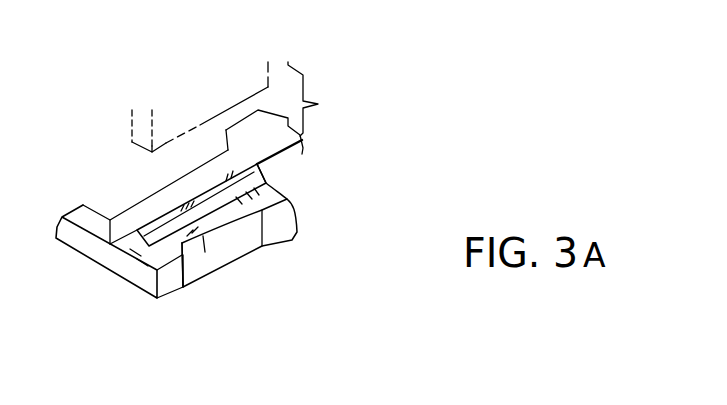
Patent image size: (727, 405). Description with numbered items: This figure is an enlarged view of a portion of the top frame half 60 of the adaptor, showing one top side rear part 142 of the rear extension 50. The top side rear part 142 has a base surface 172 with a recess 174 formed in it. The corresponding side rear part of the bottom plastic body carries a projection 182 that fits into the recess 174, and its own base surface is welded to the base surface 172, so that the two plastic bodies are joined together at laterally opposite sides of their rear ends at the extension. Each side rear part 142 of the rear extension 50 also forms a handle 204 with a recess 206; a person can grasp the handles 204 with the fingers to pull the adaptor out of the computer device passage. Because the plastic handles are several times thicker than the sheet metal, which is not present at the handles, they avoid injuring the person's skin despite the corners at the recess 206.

The rear extension 50 is at (330, 283).
The top frame half 60 is at (323, 165).
The top side rear part 142 is at (390, 242).
The base surface 172 is at (272, 192).
The recess 174 is at (223, 205).
The projection 182 is at (166, 143).
The handle 204 is at (177, 296).
The recess 206 is at (190, 263).